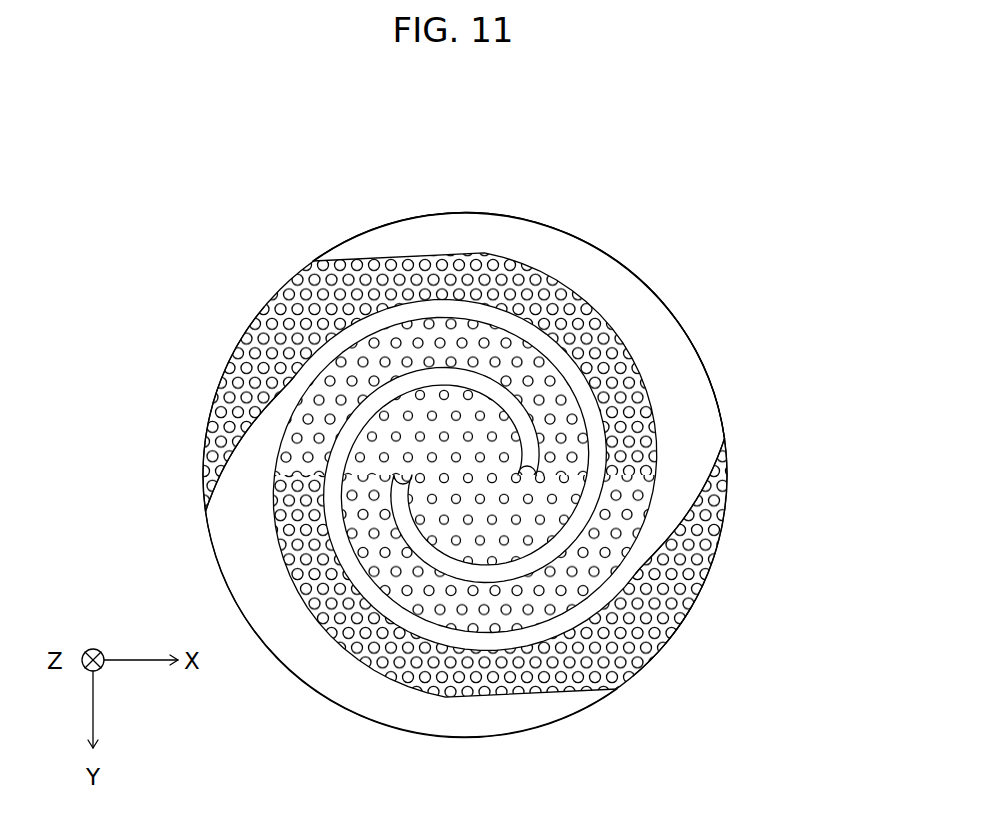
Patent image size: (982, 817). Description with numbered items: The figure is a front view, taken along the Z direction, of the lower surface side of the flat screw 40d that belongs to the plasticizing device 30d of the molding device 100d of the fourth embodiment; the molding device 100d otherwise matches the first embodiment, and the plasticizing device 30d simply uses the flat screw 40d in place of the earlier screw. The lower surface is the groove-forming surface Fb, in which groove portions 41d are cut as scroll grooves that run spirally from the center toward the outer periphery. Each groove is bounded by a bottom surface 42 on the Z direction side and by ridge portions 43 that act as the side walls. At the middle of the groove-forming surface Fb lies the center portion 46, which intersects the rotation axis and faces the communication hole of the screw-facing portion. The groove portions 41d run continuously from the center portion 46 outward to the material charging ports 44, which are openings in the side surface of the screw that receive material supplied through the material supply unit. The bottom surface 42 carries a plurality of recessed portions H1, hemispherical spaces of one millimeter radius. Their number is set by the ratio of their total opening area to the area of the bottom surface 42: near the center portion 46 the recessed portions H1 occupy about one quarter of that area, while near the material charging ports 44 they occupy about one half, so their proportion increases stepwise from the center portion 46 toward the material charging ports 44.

The molding device 100d is at (100, 168).
The plasticizing device 30d is at (197, 168).
The flat screw 40d is at (212, 250).
The groove portions 41d is at (797, 304).
The bottom surface 42 is at (520, 447).
The ridge portions 43 is at (590, 456).
The material charging ports 44 is at (225, 370).
The center portion 46 is at (460, 407).
The groove-forming surface Fb is at (605, 267).
The recessed portions H1 is at (668, 628).